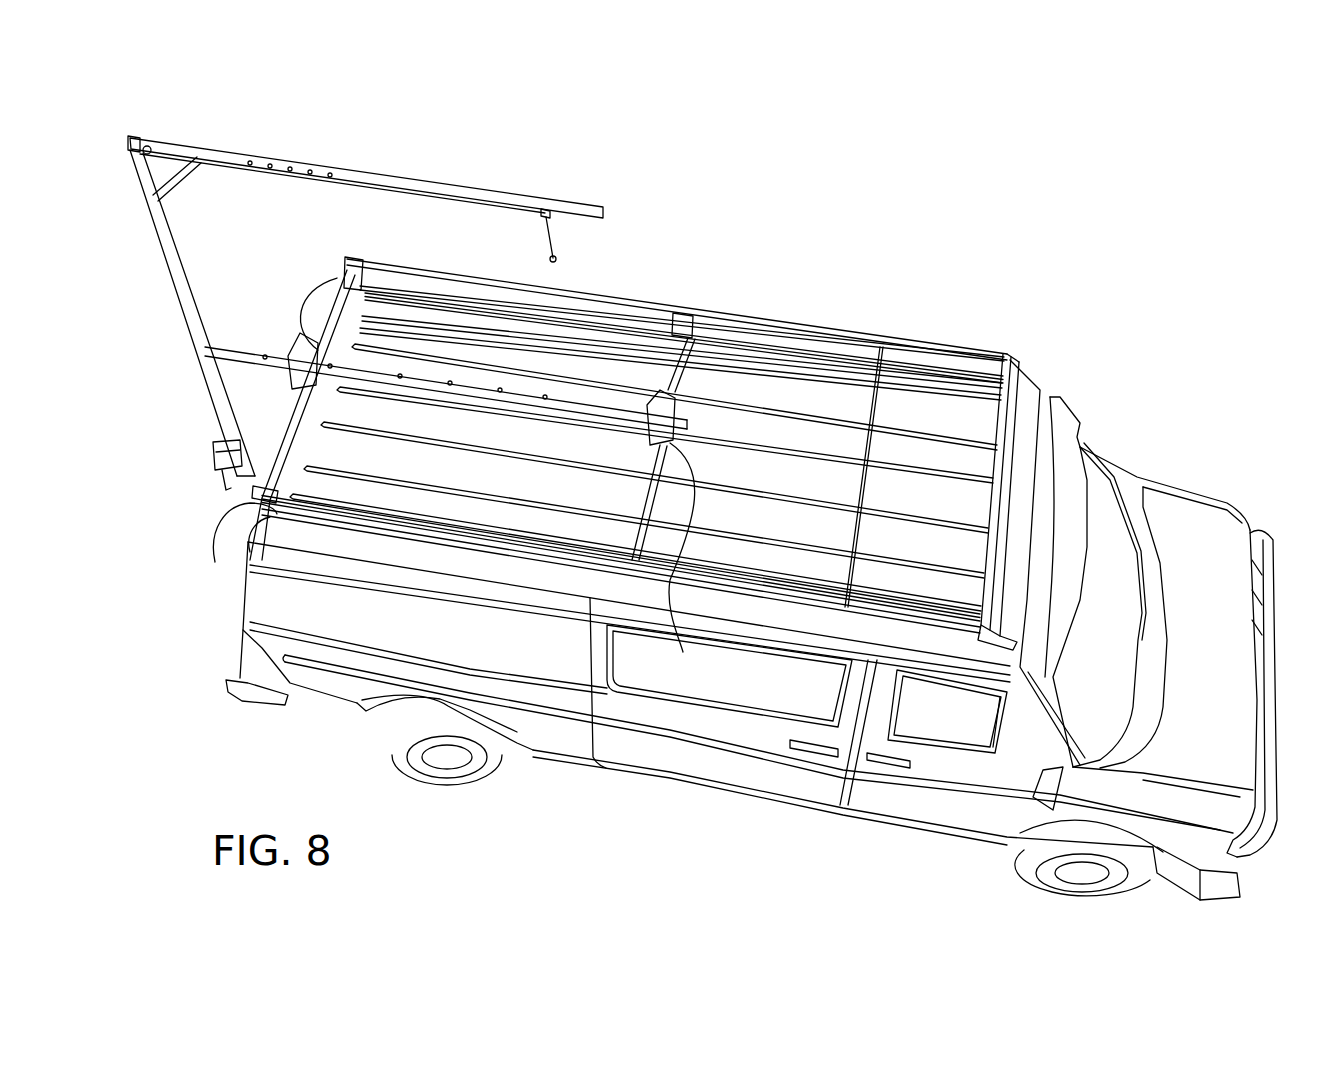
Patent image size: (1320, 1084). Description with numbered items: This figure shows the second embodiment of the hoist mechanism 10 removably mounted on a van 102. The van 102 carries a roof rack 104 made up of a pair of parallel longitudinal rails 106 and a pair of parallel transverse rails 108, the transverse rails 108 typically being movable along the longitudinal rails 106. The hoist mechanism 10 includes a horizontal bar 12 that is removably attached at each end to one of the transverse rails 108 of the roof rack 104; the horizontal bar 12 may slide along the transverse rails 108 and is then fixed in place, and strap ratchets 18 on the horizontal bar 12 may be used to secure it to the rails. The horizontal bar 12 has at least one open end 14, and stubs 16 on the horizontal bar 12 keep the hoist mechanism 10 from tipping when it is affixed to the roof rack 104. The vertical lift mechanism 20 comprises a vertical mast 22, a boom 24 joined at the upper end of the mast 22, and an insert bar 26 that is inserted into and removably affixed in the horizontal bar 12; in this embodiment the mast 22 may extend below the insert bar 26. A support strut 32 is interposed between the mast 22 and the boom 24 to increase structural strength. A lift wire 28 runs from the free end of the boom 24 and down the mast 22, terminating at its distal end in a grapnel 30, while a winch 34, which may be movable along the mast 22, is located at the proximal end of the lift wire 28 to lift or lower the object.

The hoist mechanism 10 is at (585, 160).
The horizontal bar 12 is at (610, 412).
The open end 14 is at (278, 357).
The stubs 16 is at (318, 350).
The strap ratchets 18 is at (322, 345).
The vertical lift mechanism 20 is at (478, 168).
The vertical mast 22 is at (178, 295).
The boom 24 is at (534, 198).
The insert bar 26 is at (237, 347).
The lift wire 28 is at (557, 240).
The grapnel 30 is at (560, 259).
The support strut 32 is at (178, 181).
The winch 34 is at (215, 462).
The van 102 is at (1228, 663).
The roof rack 104 is at (840, 310).
The longitudinal rails 106 is at (970, 352).
The transverse rails 108 is at (333, 284).